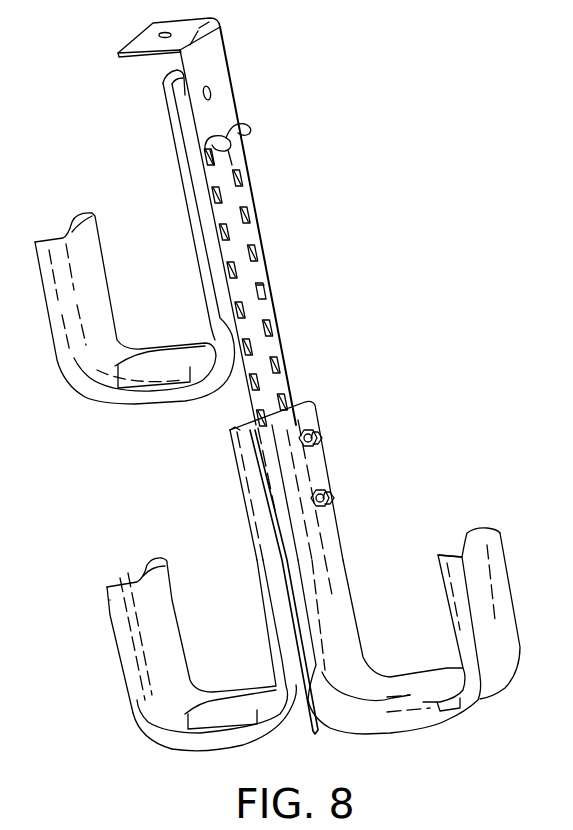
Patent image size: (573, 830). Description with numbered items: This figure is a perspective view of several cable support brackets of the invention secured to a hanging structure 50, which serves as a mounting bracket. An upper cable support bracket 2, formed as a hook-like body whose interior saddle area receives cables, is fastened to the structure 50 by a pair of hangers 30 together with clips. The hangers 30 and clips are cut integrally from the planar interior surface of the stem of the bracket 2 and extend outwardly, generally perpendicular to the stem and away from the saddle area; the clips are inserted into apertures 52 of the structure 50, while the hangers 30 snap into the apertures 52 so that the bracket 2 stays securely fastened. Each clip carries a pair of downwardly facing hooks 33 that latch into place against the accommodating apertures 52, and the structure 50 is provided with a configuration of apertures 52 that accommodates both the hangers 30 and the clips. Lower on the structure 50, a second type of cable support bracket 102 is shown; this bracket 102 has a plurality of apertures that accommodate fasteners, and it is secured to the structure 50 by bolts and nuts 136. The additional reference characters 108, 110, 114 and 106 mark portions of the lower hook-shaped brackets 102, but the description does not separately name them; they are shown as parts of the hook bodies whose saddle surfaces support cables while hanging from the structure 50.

The cable support bracket 2 is at (115, 178).
The structure 50 is at (213, 56).
The hanger 30 is at (250, 131).
The aperture 52 is at (261, 244).
The downwardly facing hook 33 is at (268, 293).
The nut 136 is at (320, 427).
The cable support bracket 102 is at (188, 610).
The hook leg 108 is at (88, 687).
The saddle pad 110 is at (228, 702).
The bend portion 114 is at (177, 744).
The hook base 106 is at (215, 763).